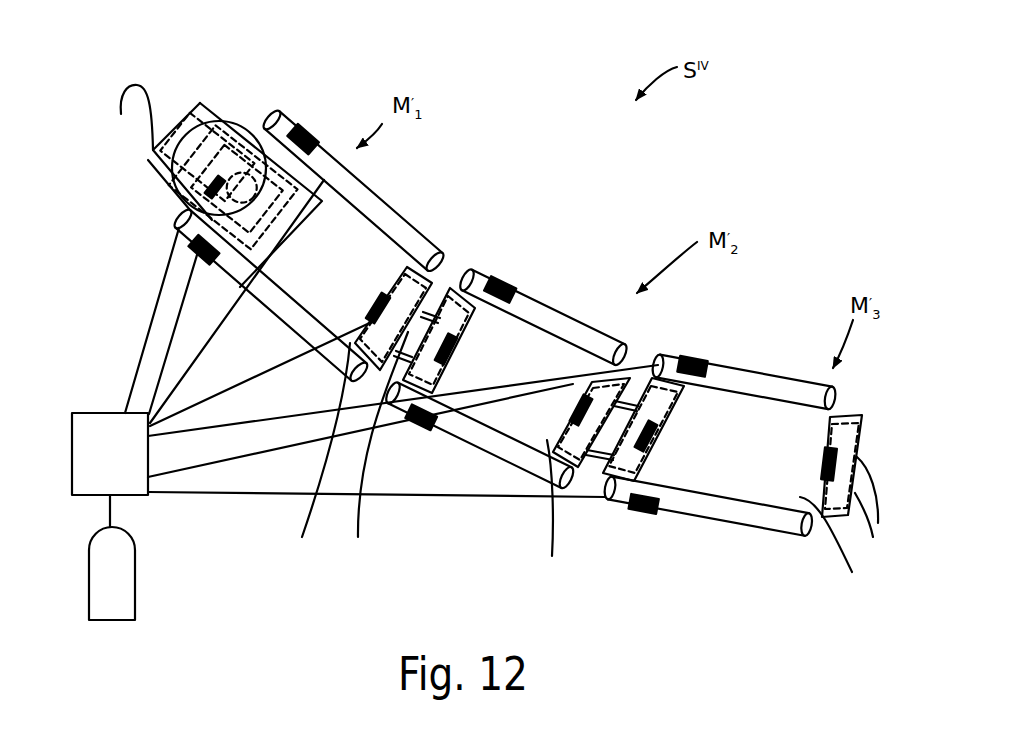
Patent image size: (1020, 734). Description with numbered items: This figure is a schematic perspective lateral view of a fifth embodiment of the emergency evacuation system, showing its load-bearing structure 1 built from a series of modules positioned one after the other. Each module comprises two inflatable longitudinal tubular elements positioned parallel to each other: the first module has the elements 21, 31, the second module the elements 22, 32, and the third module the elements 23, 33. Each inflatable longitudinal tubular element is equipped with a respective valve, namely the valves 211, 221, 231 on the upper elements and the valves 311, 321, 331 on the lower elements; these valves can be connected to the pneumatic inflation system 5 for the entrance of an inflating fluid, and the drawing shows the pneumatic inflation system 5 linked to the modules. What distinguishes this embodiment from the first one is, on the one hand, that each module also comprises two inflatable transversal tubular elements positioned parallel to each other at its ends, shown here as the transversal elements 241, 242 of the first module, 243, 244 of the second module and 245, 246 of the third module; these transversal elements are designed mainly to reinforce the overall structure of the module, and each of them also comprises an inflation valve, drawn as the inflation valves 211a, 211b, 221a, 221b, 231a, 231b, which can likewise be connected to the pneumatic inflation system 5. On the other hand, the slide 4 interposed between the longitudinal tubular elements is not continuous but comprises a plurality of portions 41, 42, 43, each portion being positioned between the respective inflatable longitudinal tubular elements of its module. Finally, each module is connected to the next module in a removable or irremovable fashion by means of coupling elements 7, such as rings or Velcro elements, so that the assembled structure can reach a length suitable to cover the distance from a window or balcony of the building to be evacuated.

The load-bearing structure 1 is at (470, 240).
The slide 4 is at (858, 442).
The pneumatic inflation system 5 is at (52, 413).
The coupling elements 7 is at (629, 448).
The inflatable longitudinal tubular element 21 is at (391, 206).
The inflatable longitudinal tubular element 22 is at (560, 307).
The inflatable longitudinal tubular element 23 is at (733, 363).
The inflatable longitudinal tubular element 31 is at (283, 328).
The inflatable longitudinal tubular element 32 is at (470, 450).
The inflatable longitudinal tubular element 33 is at (737, 528).
The portion of the slide 41 is at (310, 456).
The portion of the slide 42 is at (544, 513).
The portion of the slide 43 is at (834, 546).
The valve 211 is at (299, 136).
The inflation valve 211a is at (217, 185).
The inflation valve 211b is at (377, 306).
The valve 221 is at (493, 278).
The inflation valve 221a is at (452, 356).
The inflation valve 221b is at (586, 406).
The valve 231 is at (697, 357).
The inflation valve 231a is at (653, 440).
The inflation valve 231b is at (829, 458).
The inflatable transversal tubular element 241 is at (254, 148).
The inflatable transversal tubular element 242 is at (396, 284).
The inflatable transversal tubular element 243 is at (467, 323).
The inflatable transversal tubular element 244 is at (560, 437).
The inflatable transversal tubular element 245 is at (668, 411).
The inflatable transversal tubular element 246 is at (823, 485).
The valve 311 is at (182, 235).
The valve 321 is at (427, 423).
The valve 331 is at (647, 510).